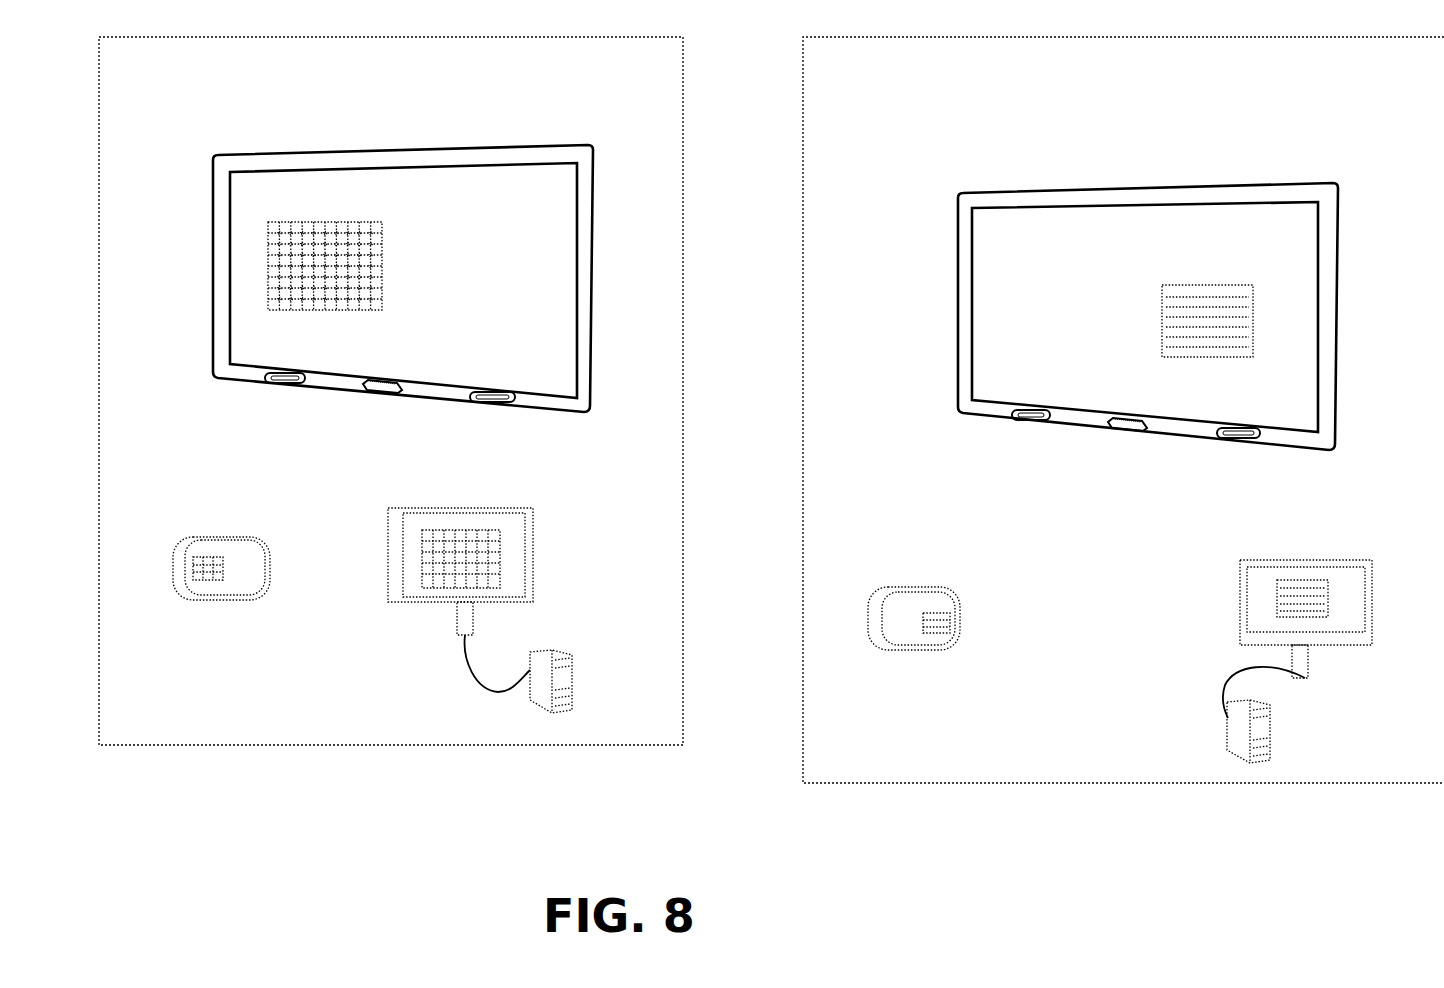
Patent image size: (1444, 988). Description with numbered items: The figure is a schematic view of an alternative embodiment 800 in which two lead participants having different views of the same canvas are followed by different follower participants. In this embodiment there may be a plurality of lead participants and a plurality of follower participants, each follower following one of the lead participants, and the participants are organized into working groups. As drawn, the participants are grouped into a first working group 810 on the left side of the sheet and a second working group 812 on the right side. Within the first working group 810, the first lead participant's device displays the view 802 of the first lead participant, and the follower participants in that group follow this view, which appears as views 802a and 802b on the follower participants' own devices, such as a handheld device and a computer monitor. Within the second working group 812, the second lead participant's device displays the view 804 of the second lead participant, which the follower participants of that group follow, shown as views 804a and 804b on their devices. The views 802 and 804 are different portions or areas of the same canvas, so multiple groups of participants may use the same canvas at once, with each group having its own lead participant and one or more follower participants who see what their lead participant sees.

The alternative embodiment 800 is at (771, 439).
The first working group 810 is at (143, 65).
The second working group 812 is at (849, 65).
The view of the first lead participant 802 is at (325, 220).
The view on follower participant's device 802a is at (207, 580).
The view on follower participant's device 802b is at (460, 588).
The view of the second lead participant 804 is at (1193, 283).
The view on follower participant's device 804a is at (935, 633).
The view on follower participant's device 804b is at (1320, 617).